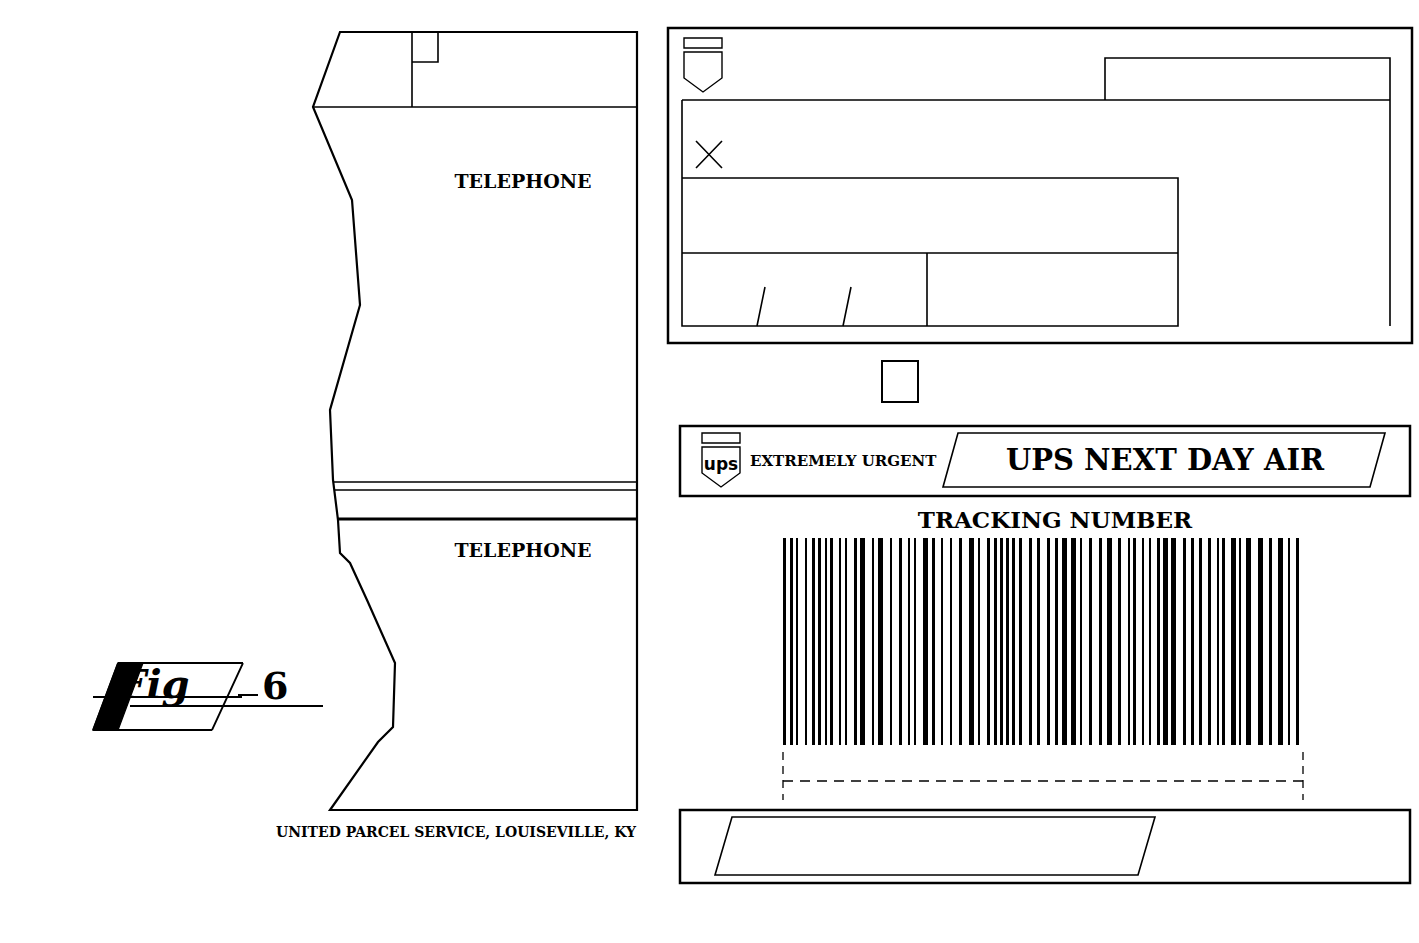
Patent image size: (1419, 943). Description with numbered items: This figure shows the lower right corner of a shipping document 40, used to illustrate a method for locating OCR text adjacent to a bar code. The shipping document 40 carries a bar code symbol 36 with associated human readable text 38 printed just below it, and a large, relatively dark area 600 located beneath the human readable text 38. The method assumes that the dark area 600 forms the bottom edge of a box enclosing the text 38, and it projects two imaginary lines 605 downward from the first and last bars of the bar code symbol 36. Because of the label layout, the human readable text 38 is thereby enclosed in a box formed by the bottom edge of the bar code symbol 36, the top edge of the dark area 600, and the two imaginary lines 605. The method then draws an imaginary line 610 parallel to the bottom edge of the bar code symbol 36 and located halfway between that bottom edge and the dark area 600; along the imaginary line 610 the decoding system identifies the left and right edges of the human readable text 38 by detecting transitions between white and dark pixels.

The bar code symbol 36 is at (1303, 655).
The human readable text 38 is at (1125, 770).
The shipping document 40 is at (1262, 392).
The dark area 600 is at (1343, 810).
The imaginary lines 605 is at (783, 781).
The imaginary line 610 is at (1283, 781).